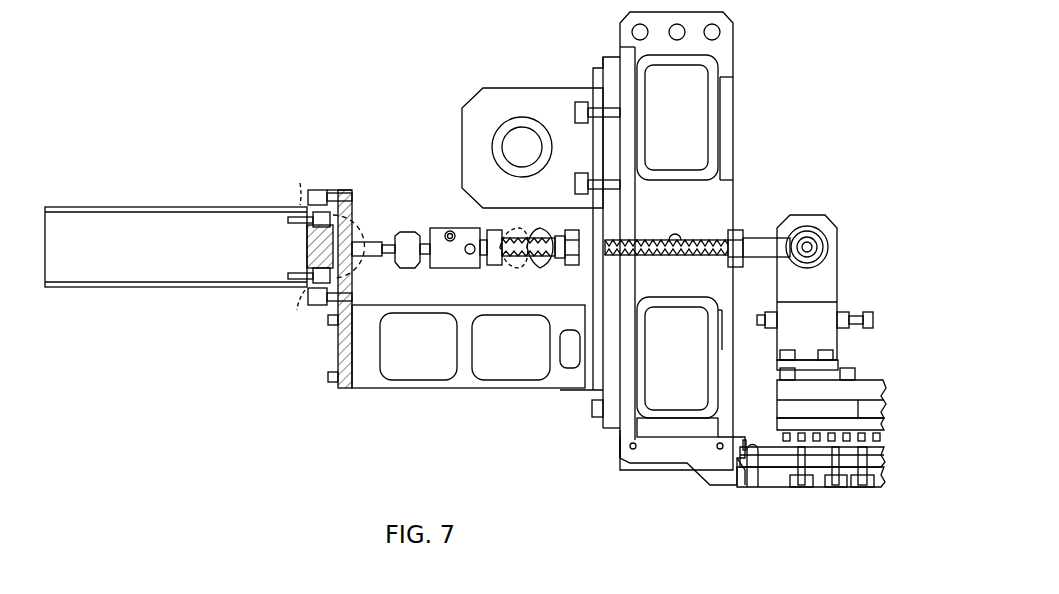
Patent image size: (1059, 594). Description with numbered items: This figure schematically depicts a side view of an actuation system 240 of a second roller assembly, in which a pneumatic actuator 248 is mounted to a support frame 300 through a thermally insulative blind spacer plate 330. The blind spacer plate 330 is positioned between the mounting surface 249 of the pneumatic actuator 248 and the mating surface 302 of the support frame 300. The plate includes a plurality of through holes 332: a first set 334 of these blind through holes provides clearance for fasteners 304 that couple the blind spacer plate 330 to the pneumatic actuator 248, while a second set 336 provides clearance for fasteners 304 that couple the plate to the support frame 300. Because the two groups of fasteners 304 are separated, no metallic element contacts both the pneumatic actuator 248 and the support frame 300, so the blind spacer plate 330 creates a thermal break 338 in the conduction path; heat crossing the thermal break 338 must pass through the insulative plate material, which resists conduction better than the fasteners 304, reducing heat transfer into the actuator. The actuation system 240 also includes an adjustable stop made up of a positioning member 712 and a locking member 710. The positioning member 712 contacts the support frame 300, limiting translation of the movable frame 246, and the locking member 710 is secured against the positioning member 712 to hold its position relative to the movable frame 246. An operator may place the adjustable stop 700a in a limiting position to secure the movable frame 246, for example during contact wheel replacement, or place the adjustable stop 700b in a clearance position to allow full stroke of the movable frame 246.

The actuation system 240 is at (458, 216).
The movable frame 246 is at (812, 215).
The pneumatic actuator 248 is at (176, 200).
The mounting surface 249 is at (307, 246).
The support frame 300 is at (436, 392).
The mating surface 302 is at (340, 362).
The fasteners 304 is at (352, 195).
The blind spacer plate 330 is at (324, 190).
The through holes 332 is at (246, 207).
The first set of blind through holes 334 is at (300, 205).
The second set of blind through holes 336 is at (330, 320).
The thermal break 338 is at (300, 312).
The adjustable stop in limiting position 700a is at (552, 326).
The adjustable stop in clearance position 700b is at (484, 326).
The locking member 710 is at (550, 268).
The positioning member 712 is at (580, 252).